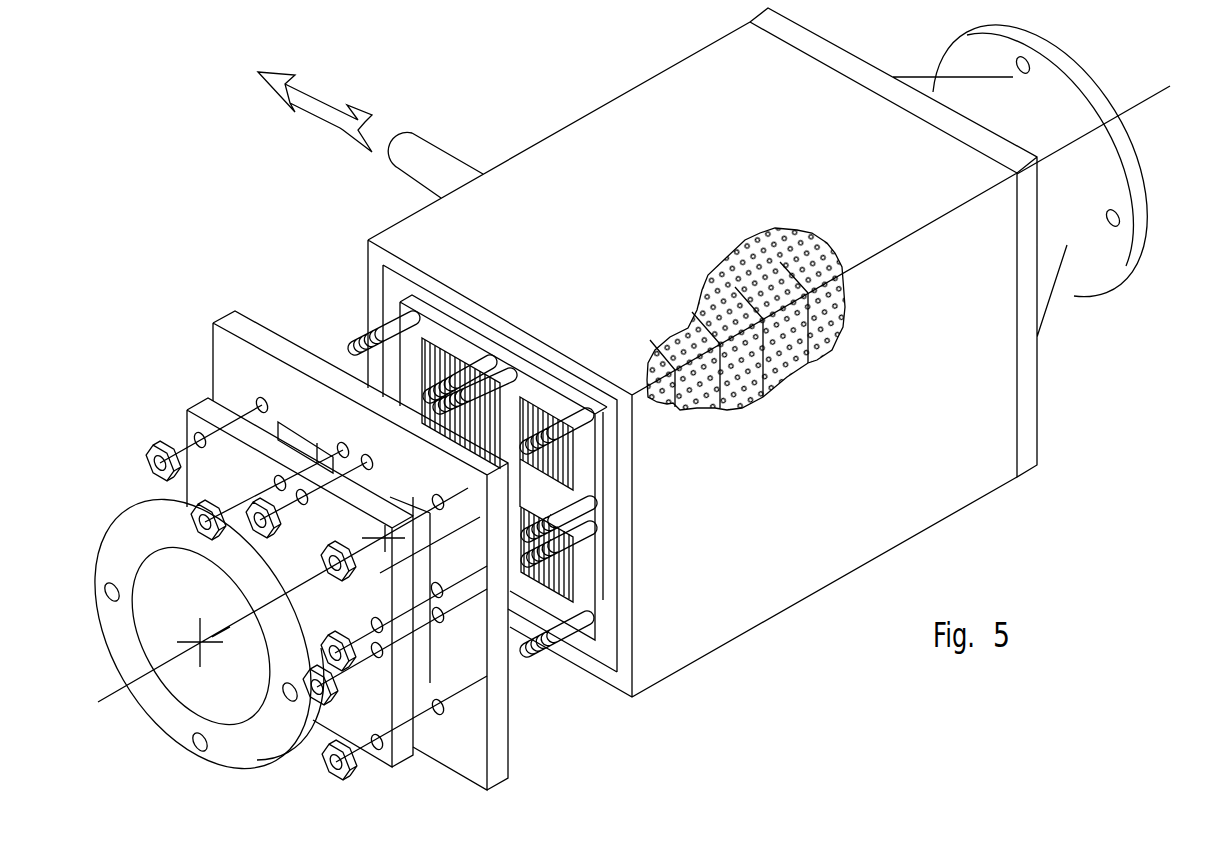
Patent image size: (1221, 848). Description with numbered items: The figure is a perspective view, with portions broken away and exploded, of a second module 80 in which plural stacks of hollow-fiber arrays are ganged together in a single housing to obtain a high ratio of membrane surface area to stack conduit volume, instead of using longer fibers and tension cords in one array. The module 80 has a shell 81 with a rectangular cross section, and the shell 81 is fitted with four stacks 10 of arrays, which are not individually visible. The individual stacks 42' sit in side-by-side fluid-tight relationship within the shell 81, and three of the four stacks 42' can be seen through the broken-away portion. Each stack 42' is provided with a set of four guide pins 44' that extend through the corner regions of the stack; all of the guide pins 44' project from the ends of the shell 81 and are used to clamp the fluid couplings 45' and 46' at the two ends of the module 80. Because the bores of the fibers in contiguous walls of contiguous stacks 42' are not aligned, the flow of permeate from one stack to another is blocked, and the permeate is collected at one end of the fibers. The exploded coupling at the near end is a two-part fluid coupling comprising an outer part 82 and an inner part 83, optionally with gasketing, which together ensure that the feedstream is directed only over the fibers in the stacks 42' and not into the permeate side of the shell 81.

The module 80 is at (590, 74).
The shell 81 is at (557, 167).
The stacks of arrays 10 is at (825, 272).
The fluid coupling 45' is at (377, 444).
The inner part 83 is at (250, 360).
The outer part 82 is at (197, 476).
The stacks 42' is at (596, 470).
The guide pins 44' is at (562, 681).
The fluid coupling 46' is at (973, 242).